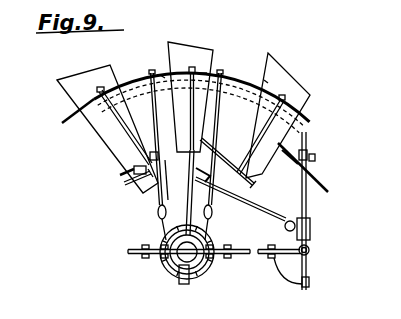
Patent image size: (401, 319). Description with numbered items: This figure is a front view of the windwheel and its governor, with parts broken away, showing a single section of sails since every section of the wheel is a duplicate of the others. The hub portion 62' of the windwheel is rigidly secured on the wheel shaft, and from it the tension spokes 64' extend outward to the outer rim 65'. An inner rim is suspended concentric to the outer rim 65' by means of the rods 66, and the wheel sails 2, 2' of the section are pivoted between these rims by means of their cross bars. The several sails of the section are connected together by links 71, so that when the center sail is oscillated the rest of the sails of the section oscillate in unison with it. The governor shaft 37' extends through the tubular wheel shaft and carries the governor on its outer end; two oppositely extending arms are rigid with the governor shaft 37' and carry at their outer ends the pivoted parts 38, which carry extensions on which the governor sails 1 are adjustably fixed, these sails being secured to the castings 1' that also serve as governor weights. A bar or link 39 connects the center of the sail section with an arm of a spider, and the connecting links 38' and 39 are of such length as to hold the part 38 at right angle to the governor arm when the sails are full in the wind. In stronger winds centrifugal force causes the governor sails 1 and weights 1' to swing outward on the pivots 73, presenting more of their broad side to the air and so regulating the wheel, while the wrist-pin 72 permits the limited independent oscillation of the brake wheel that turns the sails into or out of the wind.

The wheel sail 2 is at (107, 129).
The wheel sail 2' is at (189, 97).
The rod 66 is at (122, 126).
The outer rim 65' is at (188, 103).
The tension spoke 64' is at (186, 154).
The link 71 is at (180, 144).
The governor sail 1 is at (290, 148).
The casting 1' is at (308, 167).
The pivoted part 38 is at (318, 252).
The connecting link 38' is at (245, 204).
The bar or link 39 is at (173, 185).
The governor shaft 37' is at (199, 283).
The hub portion 62' is at (163, 253).
The wrist-pin 72 is at (307, 207).
The pivot 73 is at (310, 251).